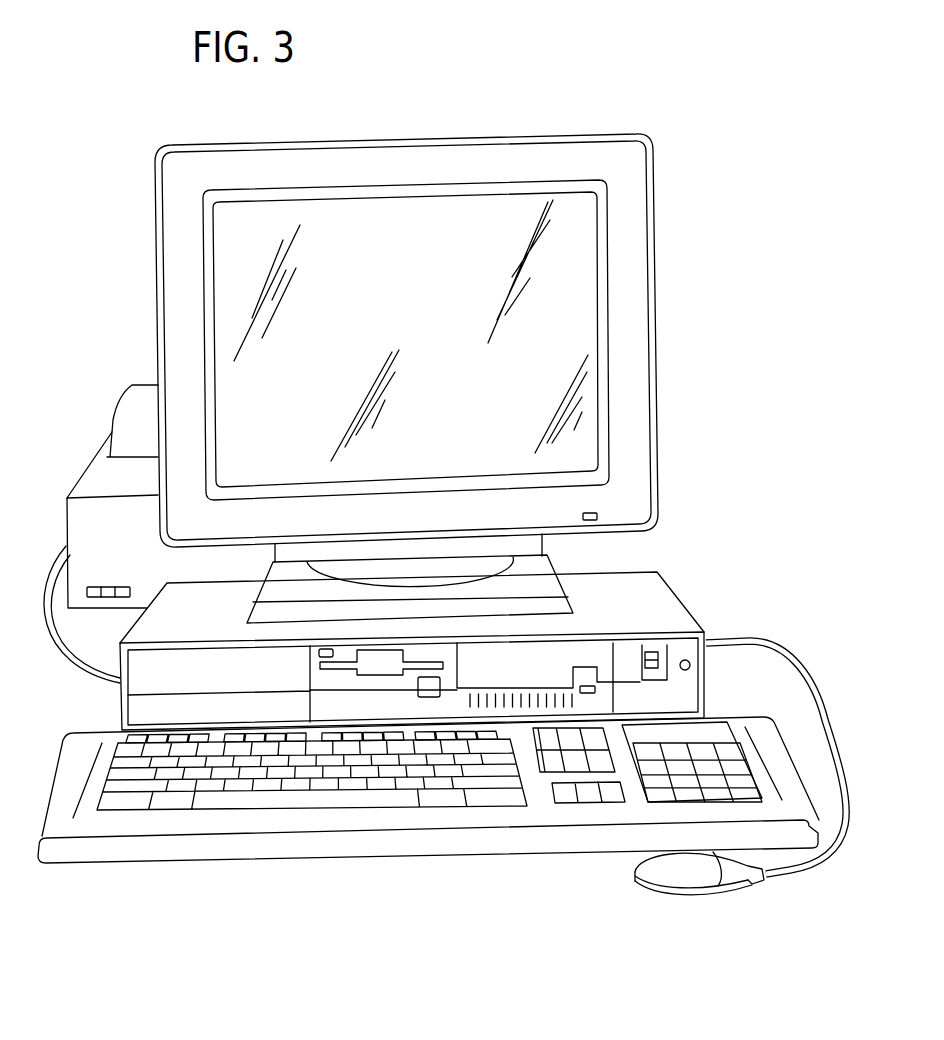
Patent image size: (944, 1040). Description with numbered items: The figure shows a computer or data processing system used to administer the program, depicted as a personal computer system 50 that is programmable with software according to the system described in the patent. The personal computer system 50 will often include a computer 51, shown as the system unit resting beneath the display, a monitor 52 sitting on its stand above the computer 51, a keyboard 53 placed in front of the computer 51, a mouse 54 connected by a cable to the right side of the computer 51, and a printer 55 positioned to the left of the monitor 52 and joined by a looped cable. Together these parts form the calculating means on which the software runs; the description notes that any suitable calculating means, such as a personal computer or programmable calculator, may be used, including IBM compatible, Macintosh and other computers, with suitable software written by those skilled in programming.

The personal computer system 50 is at (662, 250).
The computer 51 is at (662, 587).
The monitor 52 is at (562, 132).
The keyboard 53 is at (233, 797).
The mouse 54 is at (673, 873).
The printer 55 is at (123, 557).